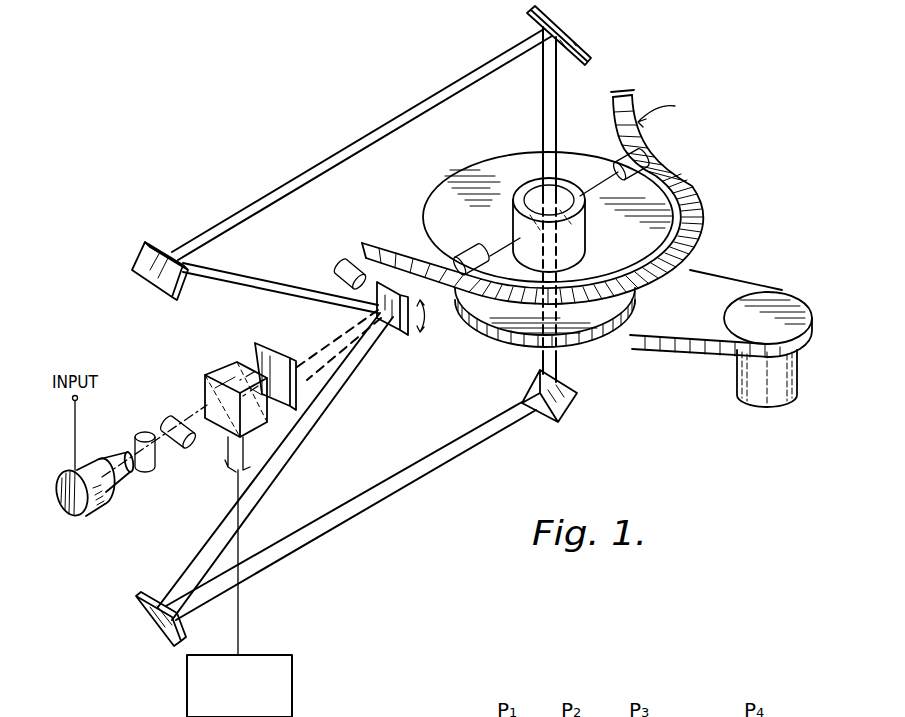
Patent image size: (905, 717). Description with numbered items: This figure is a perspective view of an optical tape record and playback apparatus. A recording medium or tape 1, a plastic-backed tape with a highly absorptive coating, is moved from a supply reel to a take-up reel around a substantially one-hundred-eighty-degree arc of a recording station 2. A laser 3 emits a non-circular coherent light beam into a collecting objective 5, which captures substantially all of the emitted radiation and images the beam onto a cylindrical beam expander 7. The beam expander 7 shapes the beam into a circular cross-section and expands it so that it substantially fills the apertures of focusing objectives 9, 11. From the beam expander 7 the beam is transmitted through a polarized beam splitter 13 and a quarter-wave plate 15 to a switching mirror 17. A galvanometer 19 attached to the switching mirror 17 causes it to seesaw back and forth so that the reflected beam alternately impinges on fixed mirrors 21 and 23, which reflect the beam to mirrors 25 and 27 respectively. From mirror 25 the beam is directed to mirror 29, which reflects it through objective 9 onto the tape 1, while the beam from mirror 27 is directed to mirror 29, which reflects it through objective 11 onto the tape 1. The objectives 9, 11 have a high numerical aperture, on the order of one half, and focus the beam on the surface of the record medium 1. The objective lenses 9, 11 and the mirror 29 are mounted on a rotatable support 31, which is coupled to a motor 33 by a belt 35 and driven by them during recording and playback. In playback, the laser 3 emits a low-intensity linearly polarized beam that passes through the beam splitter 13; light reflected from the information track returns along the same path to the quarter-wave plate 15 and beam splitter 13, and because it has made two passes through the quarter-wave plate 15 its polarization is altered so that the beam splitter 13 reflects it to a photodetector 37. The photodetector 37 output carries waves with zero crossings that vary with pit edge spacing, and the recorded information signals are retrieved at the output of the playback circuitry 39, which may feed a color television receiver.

The recording medium or tape 1 is at (628, 97).
The recording station 2 is at (634, 246).
The laser 3 is at (80, 516).
The collecting objective 5 is at (110, 457).
The cylindrical beam expander 7 is at (178, 395).
The focusing objective 9 is at (475, 246).
The focusing objective 11 is at (618, 160).
The polarized beam splitter 13 is at (208, 370).
The quarter-wave plate 15 is at (275, 346).
The switching mirror 17 is at (395, 335).
The galvanometer 19 is at (331, 263).
The fixed mirror 21 is at (148, 243).
The fixed mirror 23 is at (140, 619).
The mirror 25 is at (568, 30).
The mirror 27 is at (570, 407).
The mirror 29 is at (565, 242).
The rotatable support 31 is at (505, 156).
The motor 33 is at (758, 400).
The belt 35 is at (668, 348).
The photodetector 37 is at (232, 470).
The playback circuitry 39 is at (293, 710).